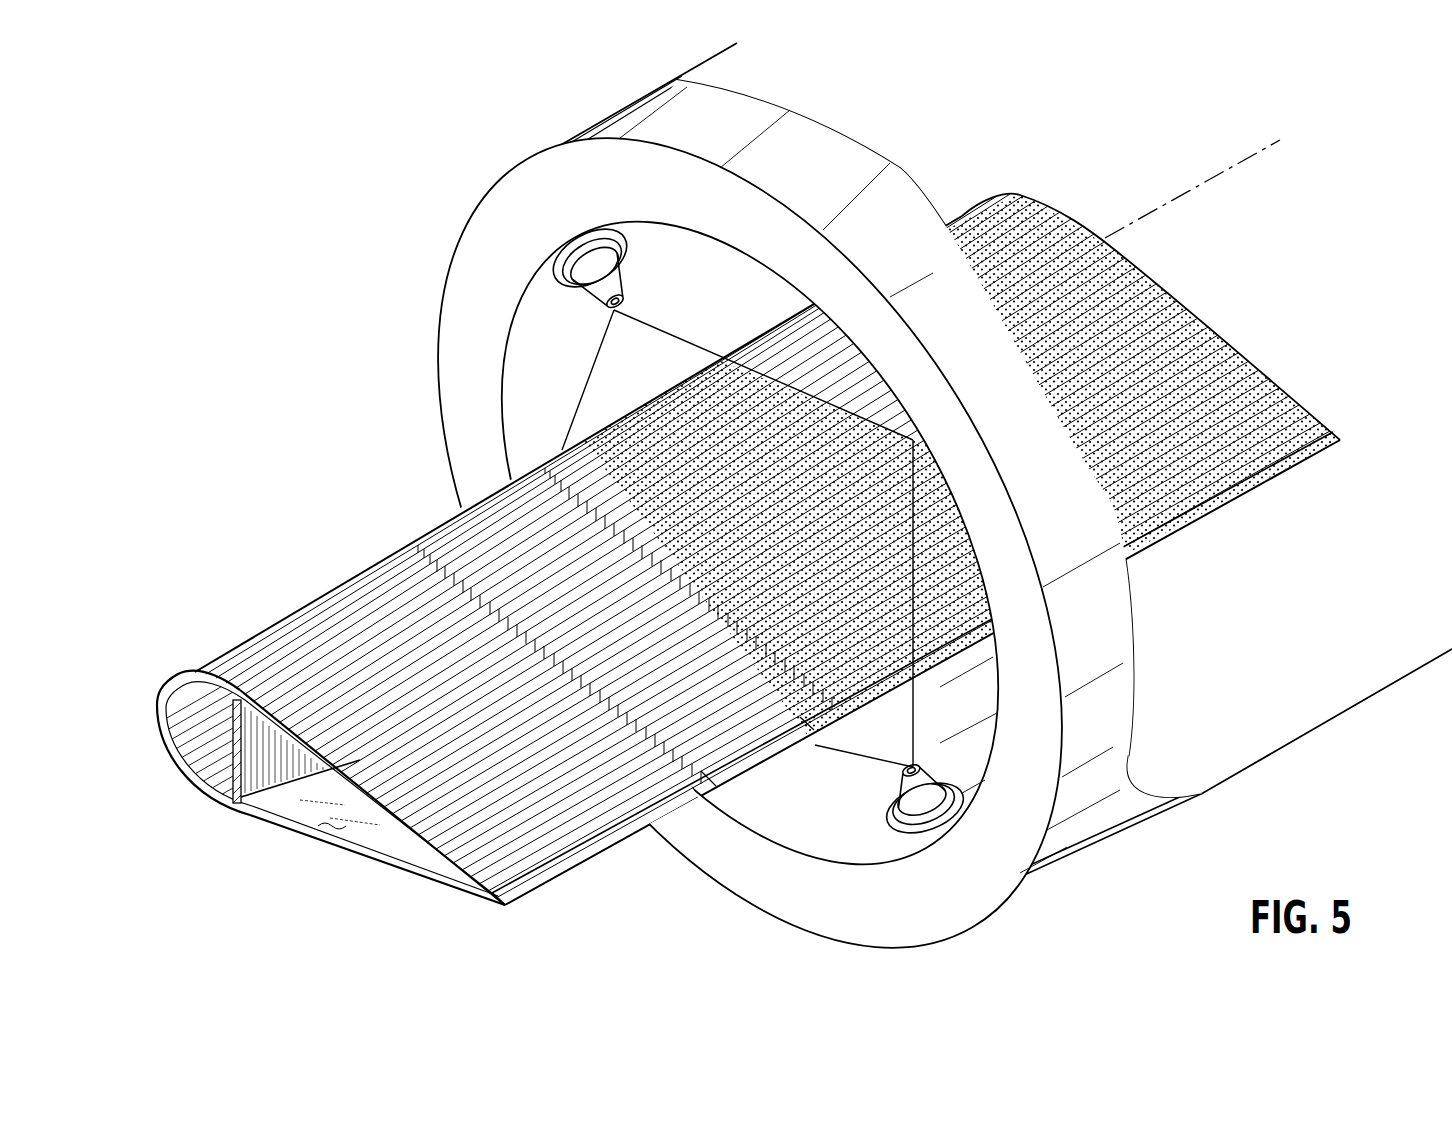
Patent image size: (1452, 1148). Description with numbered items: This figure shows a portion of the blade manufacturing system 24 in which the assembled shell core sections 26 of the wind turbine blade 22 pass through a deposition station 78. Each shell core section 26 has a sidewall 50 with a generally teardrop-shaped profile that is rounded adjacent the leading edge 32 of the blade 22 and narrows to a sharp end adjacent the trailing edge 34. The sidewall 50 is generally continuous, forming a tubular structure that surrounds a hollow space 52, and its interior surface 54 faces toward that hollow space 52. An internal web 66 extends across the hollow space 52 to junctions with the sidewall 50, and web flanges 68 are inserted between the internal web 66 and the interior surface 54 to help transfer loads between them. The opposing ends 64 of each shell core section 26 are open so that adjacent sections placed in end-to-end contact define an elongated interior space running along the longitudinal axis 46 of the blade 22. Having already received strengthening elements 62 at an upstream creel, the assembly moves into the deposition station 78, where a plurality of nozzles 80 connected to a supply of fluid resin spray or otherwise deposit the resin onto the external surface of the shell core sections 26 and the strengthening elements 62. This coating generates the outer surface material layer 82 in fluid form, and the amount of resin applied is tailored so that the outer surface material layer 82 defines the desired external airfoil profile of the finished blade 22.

The blade 22 is at (725, 566).
The blade manufacturing system 24 is at (596, 108).
The shell core section 26 is at (757, 747).
The leading edge 32 is at (155, 690).
The trailing edge 34 is at (566, 884).
The longitudinal axis 46 is at (1220, 174).
The sidewall 50 is at (488, 902).
The hollow space 52 is at (206, 762).
The interior surface 54 is at (332, 810).
The strengthening elements 62 is at (500, 605).
The opposing ends 64 is at (1235, 356).
The internal web 66 is at (230, 740).
The web flanges 68 is at (188, 674).
The deposition station 78 is at (508, 188).
The nozzles 80 is at (595, 300).
The outer surface material layer 82 is at (605, 400).